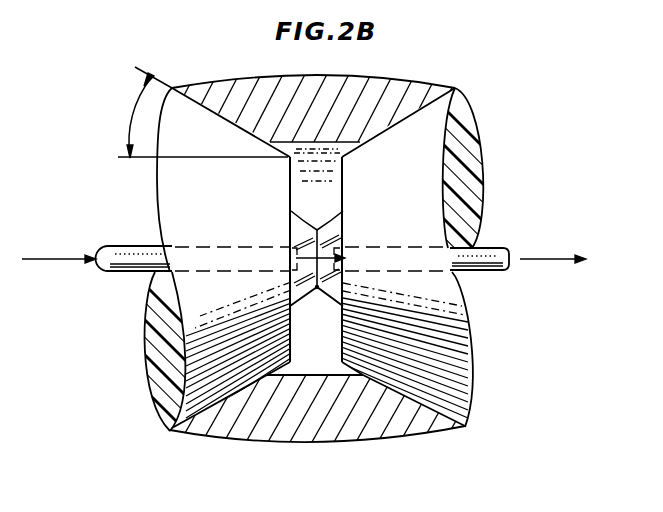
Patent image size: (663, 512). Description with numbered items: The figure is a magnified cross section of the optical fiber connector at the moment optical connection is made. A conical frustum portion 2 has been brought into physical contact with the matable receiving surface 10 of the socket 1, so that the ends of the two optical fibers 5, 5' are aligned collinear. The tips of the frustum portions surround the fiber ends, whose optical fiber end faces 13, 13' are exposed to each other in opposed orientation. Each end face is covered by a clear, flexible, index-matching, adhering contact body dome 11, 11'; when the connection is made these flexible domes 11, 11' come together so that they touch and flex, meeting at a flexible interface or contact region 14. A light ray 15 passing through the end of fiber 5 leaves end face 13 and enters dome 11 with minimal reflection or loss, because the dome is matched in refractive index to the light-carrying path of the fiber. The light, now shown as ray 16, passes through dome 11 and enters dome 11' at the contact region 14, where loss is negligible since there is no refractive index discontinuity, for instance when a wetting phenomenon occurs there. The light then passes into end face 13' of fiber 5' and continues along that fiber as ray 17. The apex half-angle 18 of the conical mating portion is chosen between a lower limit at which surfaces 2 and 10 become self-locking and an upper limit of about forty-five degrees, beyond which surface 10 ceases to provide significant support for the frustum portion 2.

The socket 1 is at (302, 446).
The conical frustum portion 2 is at (212, 374).
The optical fiber 5 is at (192, 237).
The optical fiber 5' is at (429, 238).
The matable receiving surface 10 is at (182, 408).
The contact body dome 11 is at (288, 215).
The contact body dome 11' is at (353, 214).
The optical fiber end face 13 is at (289, 288).
The optical fiber end face 13' is at (347, 287).
The flexible interface or contact region 14 is at (317, 288).
The light ray 15 is at (50, 261).
The light ray 16 is at (333, 243).
The light ray 17 is at (547, 261).
The apex half-angle 18 is at (132, 122).